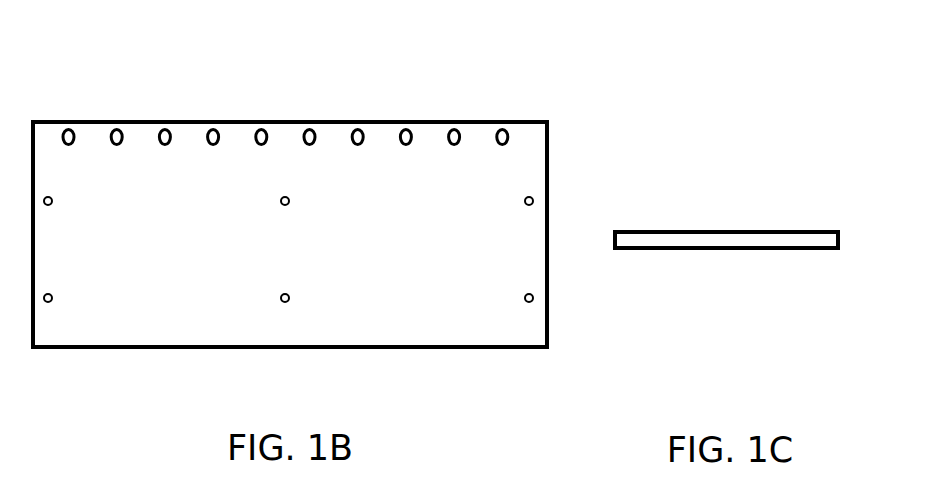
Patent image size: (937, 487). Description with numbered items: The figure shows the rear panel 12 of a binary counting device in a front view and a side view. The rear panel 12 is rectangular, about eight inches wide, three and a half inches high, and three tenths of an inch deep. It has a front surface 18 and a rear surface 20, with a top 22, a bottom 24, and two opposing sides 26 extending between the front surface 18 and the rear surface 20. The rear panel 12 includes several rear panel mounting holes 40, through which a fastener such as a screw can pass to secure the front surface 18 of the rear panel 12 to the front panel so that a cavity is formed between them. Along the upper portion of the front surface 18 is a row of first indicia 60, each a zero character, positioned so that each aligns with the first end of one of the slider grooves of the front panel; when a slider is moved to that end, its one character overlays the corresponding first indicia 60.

In FIG. 1B, the rear panel 12 is at (364, 94).
In FIG. 1C, the rear panel 12 is at (749, 199).
In FIG. 1B, the front surface 18 is at (184, 197).
In FIG. 1C, the front surface 18 is at (667, 232).
In FIG. 1C, the rear surface 20 is at (731, 251).
In FIG. 1B, the top 22 is at (267, 119).
In FIG. 1C, the top 22 is at (841, 238).
In FIG. 1B, the bottom 24 is at (299, 349).
In FIG. 1C, the bottom 24 is at (613, 242).
In FIG. 1B, the two opposing sides 26 is at (548, 287).
In FIG. 1C, the two opposing sides 26 is at (787, 237).
In FIG. 1B, the rear panel mounting hole 40 is at (532, 198).
In FIG. 1B, the first indicia 60 is at (118, 129).